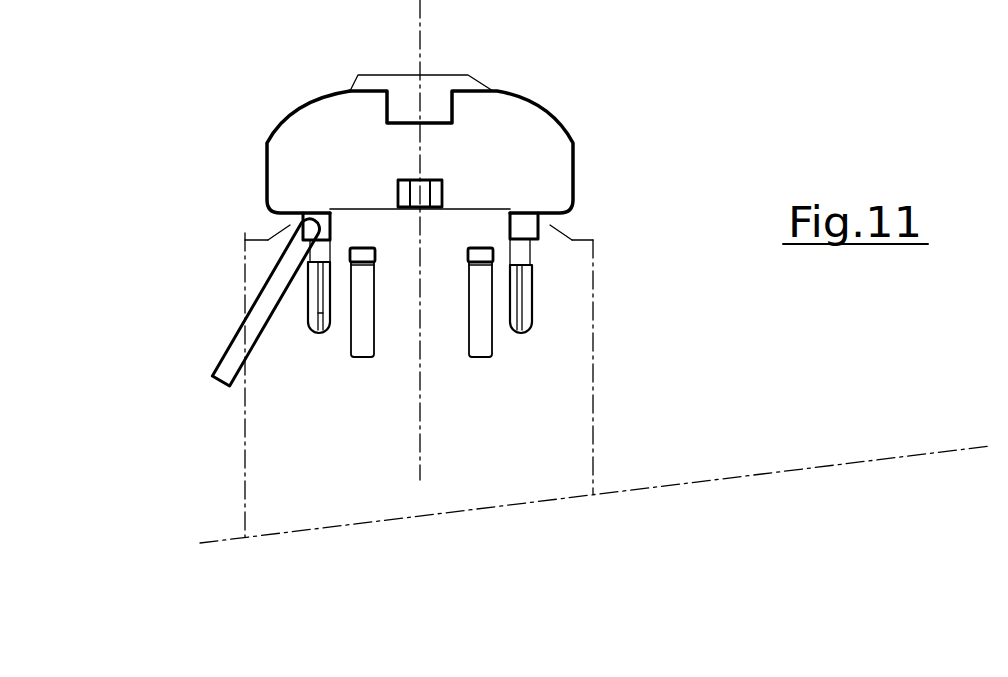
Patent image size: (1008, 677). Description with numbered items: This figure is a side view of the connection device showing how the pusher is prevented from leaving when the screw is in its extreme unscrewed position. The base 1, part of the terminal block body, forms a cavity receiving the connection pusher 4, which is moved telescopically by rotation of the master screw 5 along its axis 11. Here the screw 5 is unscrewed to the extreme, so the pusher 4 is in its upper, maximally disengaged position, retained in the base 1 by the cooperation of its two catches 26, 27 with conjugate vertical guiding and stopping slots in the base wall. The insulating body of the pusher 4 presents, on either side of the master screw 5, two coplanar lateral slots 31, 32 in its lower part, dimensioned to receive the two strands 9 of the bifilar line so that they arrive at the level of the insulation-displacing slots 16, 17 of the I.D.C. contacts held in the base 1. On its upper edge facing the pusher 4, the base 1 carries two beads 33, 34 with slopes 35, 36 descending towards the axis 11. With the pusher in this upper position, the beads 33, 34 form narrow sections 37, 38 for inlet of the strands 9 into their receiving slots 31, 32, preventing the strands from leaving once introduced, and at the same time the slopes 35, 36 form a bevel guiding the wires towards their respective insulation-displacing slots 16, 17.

The base 1 is at (585, 323).
The connection pusher 4 is at (518, 128).
The master screw 5 is at (441, 87).
The strand of line 9 is at (243, 347).
The axis of the screw 11 is at (421, 37).
The insulation-displacing slot 16 is at (307, 330).
The insulation-displacing slot 17 is at (530, 310).
The catch 26 is at (365, 252).
The catch 27 is at (478, 252).
The lateral slot 31 is at (326, 211).
The lateral slot 32 is at (527, 220).
The bead 33 is at (281, 222).
The bead 34 is at (559, 224).
The slope 35 is at (292, 230).
The slope 36 is at (545, 240).
The narrow section 37 is at (280, 214).
The narrow section 38 is at (554, 217).